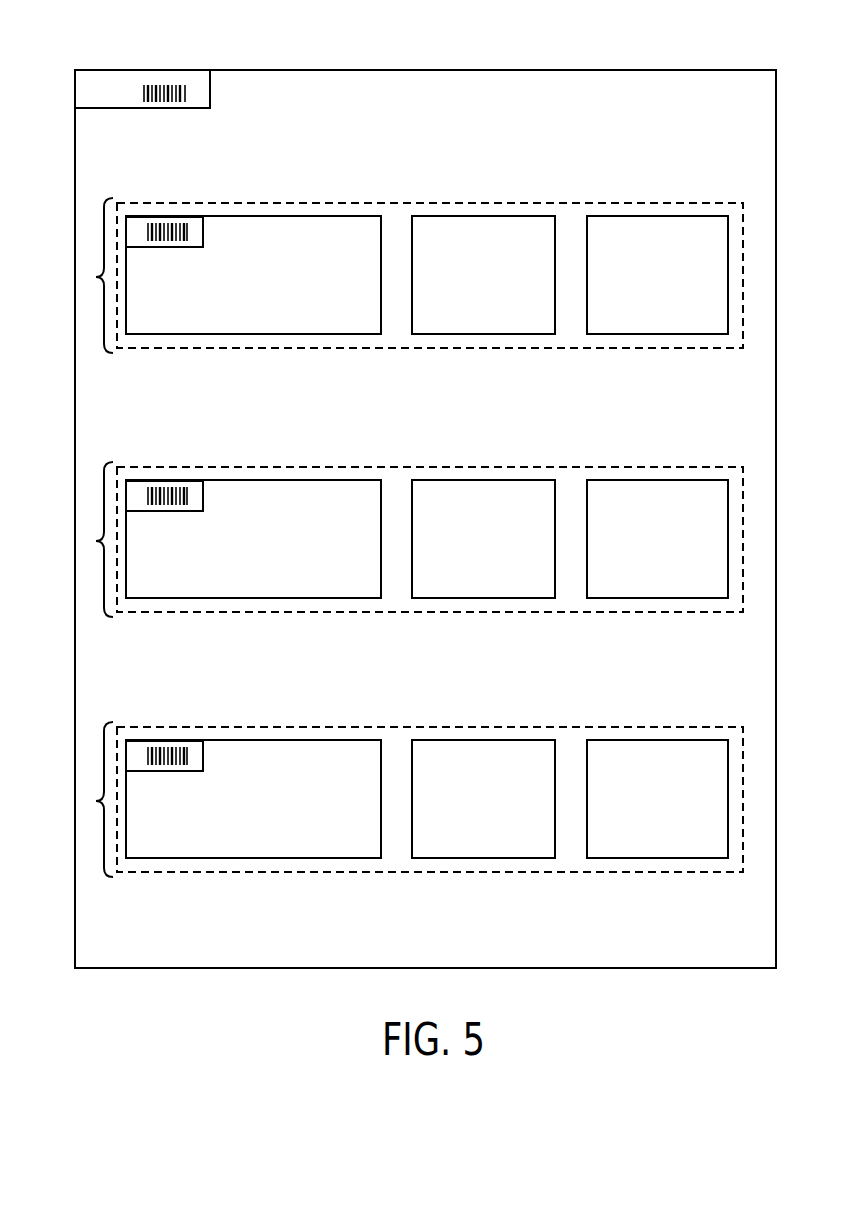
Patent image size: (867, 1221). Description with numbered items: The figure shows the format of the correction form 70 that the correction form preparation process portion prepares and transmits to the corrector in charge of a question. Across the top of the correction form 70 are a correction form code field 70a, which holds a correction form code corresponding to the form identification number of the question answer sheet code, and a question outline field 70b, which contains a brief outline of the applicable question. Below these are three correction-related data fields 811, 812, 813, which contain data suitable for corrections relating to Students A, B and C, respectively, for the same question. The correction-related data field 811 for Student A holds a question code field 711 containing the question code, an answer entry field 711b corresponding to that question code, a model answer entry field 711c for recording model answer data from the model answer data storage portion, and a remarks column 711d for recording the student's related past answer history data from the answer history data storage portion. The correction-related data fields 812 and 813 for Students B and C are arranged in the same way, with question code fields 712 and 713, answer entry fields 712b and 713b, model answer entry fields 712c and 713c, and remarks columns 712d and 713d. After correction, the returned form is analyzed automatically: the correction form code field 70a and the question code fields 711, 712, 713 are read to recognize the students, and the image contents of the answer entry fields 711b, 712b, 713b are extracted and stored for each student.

The correction form 70 is at (456, 67).
The correction form code field 70a is at (132, 82).
The question outline field 70b is at (230, 130).
The question code field 711 is at (155, 215).
The answer entry field 711b is at (326, 213).
The model answer entry field 711c is at (483, 213).
The remarks column 711d is at (658, 212).
The question code field 712 is at (164, 471).
The answer entry field 712b is at (253, 514).
The model answer entry field 712c is at (483, 514).
The remarks column 712d is at (657, 514).
The question code field 713 is at (164, 731).
The answer entry field 713b is at (253, 774).
The model answer entry field 713c is at (483, 774).
The remarks column 713d is at (657, 774).
The correction-related data field 811 is at (96, 277).
The correction-related data field 812 is at (387, 539).
The correction-related data field 813 is at (387, 799).